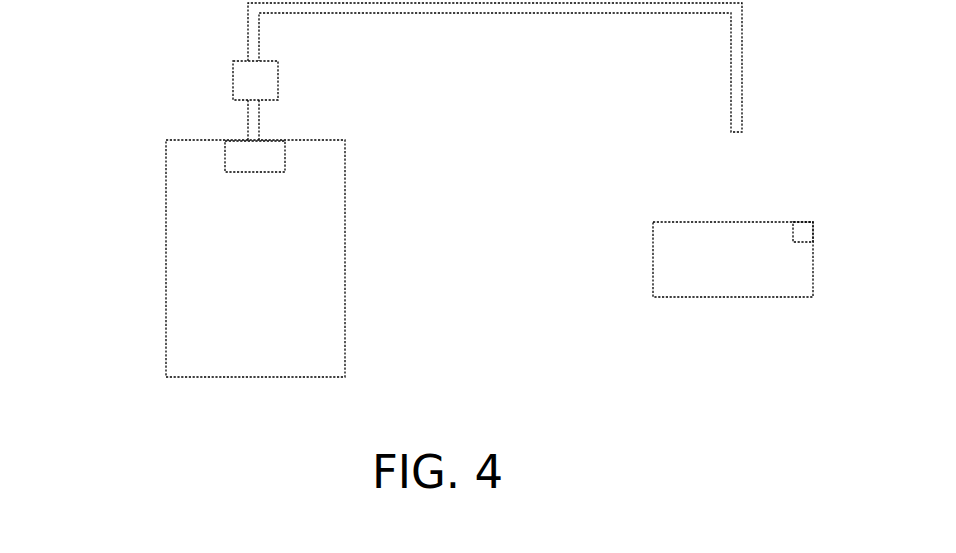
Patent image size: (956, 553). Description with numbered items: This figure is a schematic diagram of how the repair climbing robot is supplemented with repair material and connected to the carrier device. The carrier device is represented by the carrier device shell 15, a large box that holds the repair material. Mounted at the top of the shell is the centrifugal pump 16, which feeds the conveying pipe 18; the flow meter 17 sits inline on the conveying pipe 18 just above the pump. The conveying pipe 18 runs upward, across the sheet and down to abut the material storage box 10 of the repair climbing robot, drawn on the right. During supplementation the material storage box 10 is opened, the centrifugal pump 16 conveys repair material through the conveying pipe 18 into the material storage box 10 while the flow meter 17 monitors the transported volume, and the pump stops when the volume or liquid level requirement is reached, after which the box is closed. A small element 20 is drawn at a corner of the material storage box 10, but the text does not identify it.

The material storage box 10 is at (733, 297).
The carrier device shell 15 is at (166, 260).
The centrifugal pump 16 is at (225, 155).
The flow meter 17 is at (233, 80).
The conveying pipe 18 is at (248, 43).
The sensor 20 is at (803, 242).